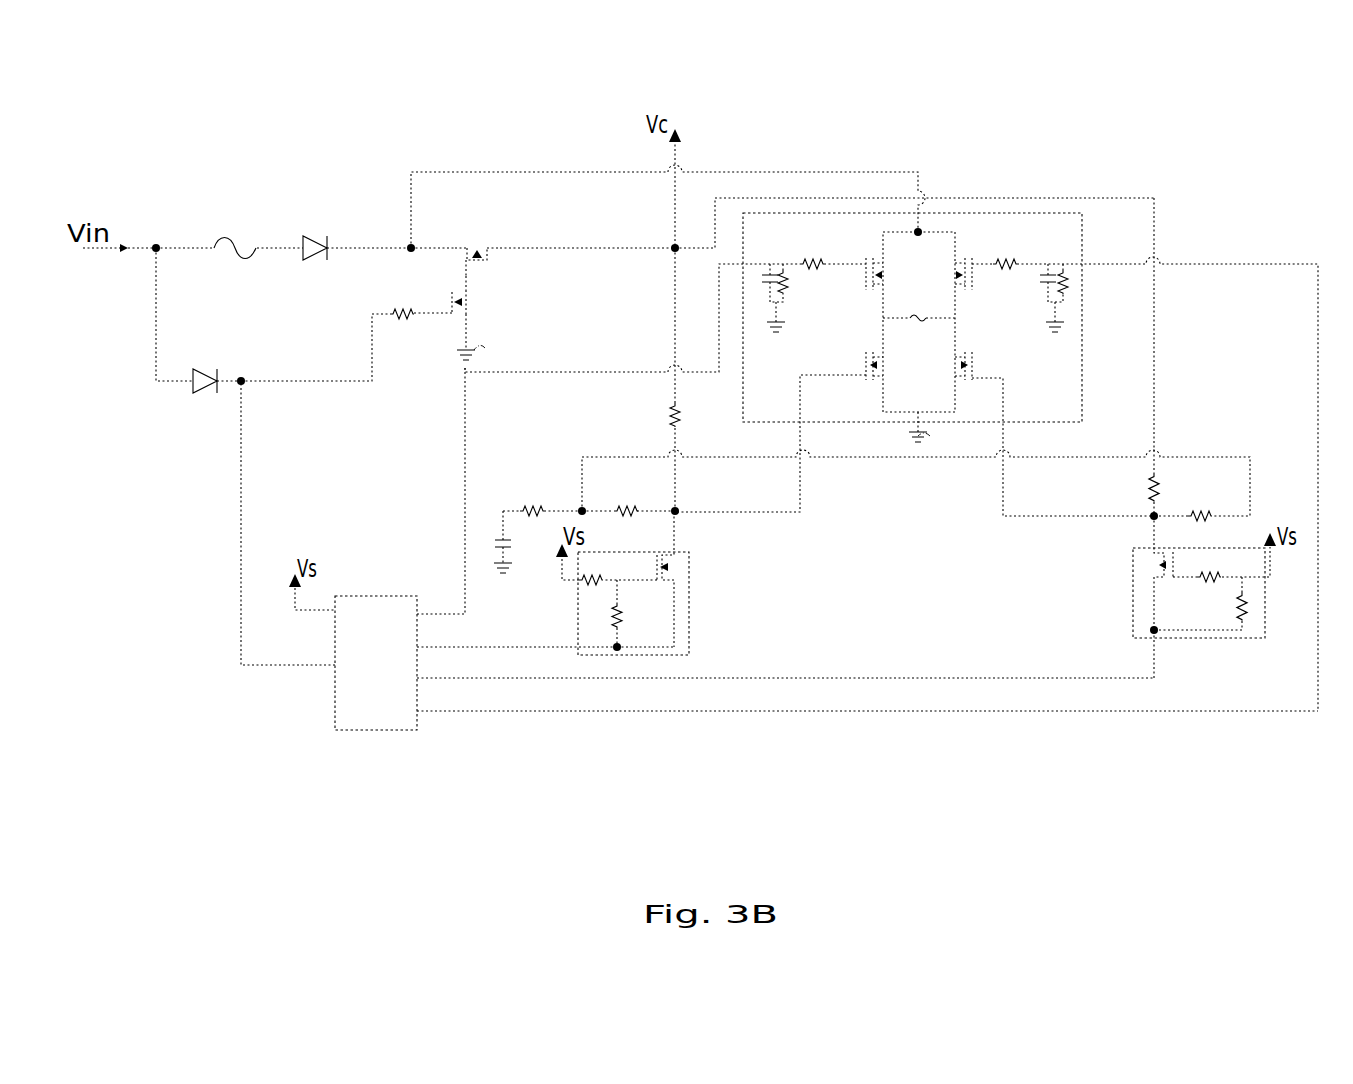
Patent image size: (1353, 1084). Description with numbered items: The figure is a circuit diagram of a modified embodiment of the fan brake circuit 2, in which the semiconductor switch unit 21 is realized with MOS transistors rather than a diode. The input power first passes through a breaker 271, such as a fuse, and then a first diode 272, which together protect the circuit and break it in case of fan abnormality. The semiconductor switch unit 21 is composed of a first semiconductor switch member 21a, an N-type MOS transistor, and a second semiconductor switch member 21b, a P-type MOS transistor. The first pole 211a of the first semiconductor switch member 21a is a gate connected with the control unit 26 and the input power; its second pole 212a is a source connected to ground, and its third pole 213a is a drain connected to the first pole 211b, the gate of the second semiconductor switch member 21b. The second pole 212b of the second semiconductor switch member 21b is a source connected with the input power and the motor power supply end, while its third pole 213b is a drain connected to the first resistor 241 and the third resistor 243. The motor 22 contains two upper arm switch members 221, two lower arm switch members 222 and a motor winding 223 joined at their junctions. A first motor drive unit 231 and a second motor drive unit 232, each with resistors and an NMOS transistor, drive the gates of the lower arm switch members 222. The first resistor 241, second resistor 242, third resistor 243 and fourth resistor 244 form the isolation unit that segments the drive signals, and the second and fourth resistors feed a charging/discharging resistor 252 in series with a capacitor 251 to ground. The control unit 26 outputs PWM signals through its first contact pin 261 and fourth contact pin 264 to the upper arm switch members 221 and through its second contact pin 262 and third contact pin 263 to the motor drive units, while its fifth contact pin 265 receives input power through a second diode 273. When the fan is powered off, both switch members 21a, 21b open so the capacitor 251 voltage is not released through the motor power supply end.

The fan brake circuit 2 is at (1250, 133).
The semiconductor switch unit 21 is at (473, 275).
The first semiconductor switch member 21a is at (469, 305).
The second semiconductor switch member 21b is at (477, 246).
The first pole of the first semiconductor switch member 211a is at (446, 309).
The second pole of the first semiconductor switch member 212a is at (467, 313).
The third pole of the first semiconductor switch member 213a is at (460, 291).
The first pole of the second semiconductor switch member 211b is at (470, 272).
The second pole of the second semiconductor switch member 212b is at (469, 248).
The third pole of the second semiconductor switch member 213b is at (489, 249).
The motor 22 is at (948, 294).
The upper arm switch members 221 is at (874, 261).
The lower arm switch members 222 is at (867, 358).
The motor winding 223 is at (912, 315).
The first motor drive unit 231 is at (690, 633).
The second motor drive unit 232 is at (1133, 617).
The first resistor 241 is at (671, 416).
The second resistor 242 is at (628, 508).
The third resistor 243 is at (1150, 489).
The fourth resistor 244 is at (1207, 512).
The capacitor 251 is at (500, 537).
The charging/discharging resistor 252 is at (524, 507).
The control unit 26 is at (377, 595).
The first contact pin 261 is at (441, 493).
The second contact pin 262 is at (545, 638).
The third contact pin 263 is at (785, 670).
The fourth contact pin 264 is at (867, 702).
The fifth contact pin 265 is at (288, 525).
The breaker 271 is at (223, 240).
The first diode 272 is at (316, 233).
The second diode 273 is at (209, 389).